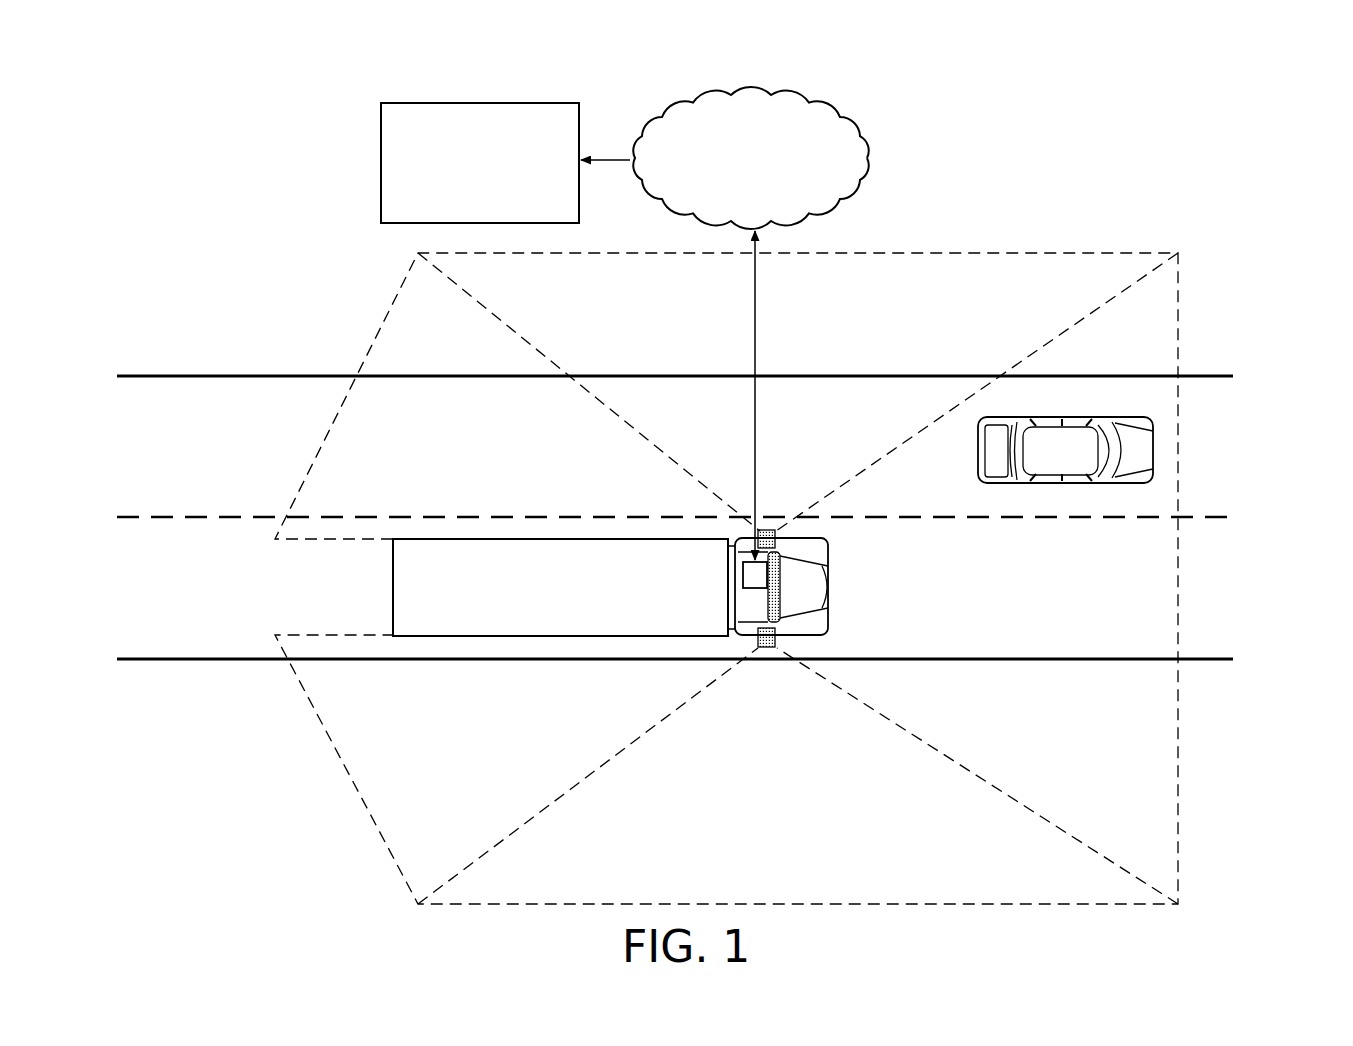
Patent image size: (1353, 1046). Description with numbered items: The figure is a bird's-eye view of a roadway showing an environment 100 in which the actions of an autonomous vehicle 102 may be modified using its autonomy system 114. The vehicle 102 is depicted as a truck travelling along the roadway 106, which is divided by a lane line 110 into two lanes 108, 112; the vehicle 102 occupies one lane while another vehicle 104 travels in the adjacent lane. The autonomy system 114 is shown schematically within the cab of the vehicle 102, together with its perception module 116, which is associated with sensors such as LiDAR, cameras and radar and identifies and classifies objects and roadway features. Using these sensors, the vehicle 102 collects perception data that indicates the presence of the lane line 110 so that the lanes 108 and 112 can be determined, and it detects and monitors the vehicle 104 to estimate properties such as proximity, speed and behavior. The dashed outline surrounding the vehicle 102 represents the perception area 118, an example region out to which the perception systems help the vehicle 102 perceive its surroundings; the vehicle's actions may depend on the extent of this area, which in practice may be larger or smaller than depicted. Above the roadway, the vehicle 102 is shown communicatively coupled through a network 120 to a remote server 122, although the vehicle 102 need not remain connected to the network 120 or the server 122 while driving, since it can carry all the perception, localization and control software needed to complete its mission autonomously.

The environment 100 is at (1197, 84).
The autonomous vehicle 102 is at (484, 538).
The vehicle 104 is at (1003, 484).
The roadway 106 is at (160, 375).
The lane 108 is at (163, 439).
The lane line 110 is at (217, 516).
The lane 112 is at (163, 606).
The autonomy system 114 is at (755, 558).
The perception module 116 is at (766, 650).
The perception area 118 is at (950, 252).
The network 120 is at (750, 158).
The remote server 122 is at (480, 163).